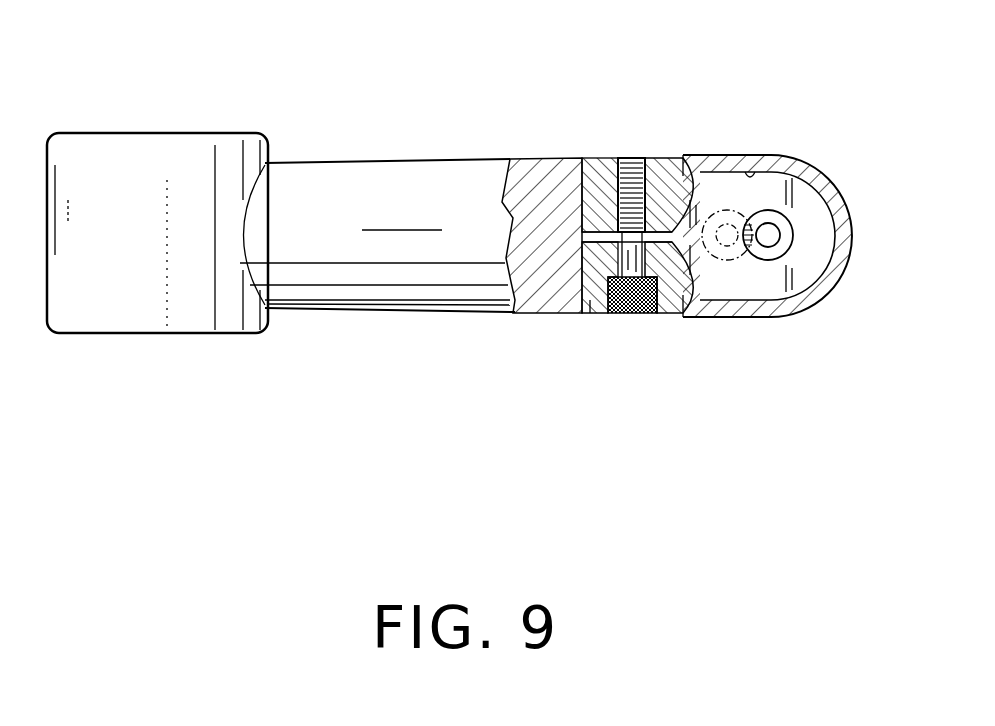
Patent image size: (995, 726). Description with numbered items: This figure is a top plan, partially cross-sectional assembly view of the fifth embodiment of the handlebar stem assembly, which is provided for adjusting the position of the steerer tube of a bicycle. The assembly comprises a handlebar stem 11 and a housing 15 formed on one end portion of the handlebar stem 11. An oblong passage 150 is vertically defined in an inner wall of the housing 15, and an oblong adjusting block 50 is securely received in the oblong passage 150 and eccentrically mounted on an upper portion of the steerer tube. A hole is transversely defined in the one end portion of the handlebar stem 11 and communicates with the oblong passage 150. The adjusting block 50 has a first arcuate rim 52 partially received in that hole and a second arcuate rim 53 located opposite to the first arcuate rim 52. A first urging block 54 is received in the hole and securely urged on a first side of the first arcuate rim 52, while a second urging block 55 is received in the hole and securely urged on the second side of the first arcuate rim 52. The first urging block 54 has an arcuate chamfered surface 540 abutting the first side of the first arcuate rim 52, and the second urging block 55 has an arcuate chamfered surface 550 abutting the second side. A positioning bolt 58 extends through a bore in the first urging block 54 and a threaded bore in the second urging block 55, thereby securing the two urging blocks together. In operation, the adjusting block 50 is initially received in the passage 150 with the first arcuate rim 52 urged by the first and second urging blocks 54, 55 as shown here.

The handlebar stem 11 is at (378, 178).
The housing 15 is at (813, 167).
The oblong passage 150 is at (760, 176).
The oblong adjusting block 50 is at (800, 273).
The first arcuate rim 52 is at (650, 165).
The second arcuate rim 53 is at (818, 228).
The first urging block 54 is at (590, 300).
The second urging block 55 is at (597, 177).
The positioning bolt 58 is at (632, 313).
The arcuate chamfered surface 540 is at (700, 313).
The arcuate chamfered surface 550 is at (685, 198).